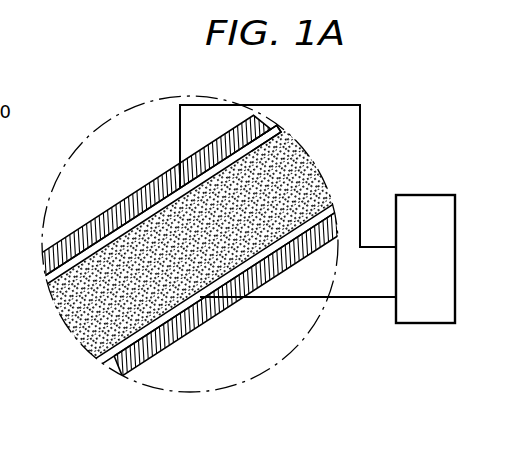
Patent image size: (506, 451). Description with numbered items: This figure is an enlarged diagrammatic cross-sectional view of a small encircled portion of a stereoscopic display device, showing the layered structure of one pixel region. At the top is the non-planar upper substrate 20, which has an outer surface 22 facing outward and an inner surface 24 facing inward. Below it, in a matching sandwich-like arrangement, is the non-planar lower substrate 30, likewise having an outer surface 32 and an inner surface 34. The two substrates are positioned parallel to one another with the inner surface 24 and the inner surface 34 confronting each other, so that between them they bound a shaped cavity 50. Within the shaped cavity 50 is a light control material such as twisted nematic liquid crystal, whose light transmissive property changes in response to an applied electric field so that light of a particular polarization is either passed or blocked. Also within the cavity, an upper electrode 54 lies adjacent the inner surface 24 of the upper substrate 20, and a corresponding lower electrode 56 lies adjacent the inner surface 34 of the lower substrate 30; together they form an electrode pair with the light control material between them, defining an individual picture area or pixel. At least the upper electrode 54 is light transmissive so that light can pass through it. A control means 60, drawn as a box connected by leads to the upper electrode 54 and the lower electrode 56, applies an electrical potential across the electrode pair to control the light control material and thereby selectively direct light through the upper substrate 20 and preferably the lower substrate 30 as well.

The upper substrate 20 is at (67, 236).
The outer surface 22 is at (93, 218).
The inner surface 24 is at (122, 226).
The lower substrate 30 is at (205, 325).
The outer surface 32 is at (163, 350).
The inner surface 34 is at (111, 362).
The shaped cavity 50 is at (72, 315).
The upper electrode 54 is at (265, 150).
The lower electrode 56 is at (317, 222).
The control means 60 is at (423, 203).